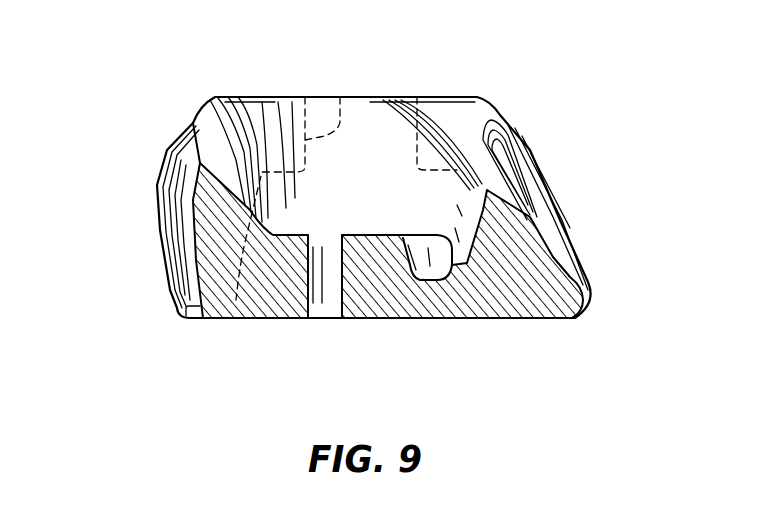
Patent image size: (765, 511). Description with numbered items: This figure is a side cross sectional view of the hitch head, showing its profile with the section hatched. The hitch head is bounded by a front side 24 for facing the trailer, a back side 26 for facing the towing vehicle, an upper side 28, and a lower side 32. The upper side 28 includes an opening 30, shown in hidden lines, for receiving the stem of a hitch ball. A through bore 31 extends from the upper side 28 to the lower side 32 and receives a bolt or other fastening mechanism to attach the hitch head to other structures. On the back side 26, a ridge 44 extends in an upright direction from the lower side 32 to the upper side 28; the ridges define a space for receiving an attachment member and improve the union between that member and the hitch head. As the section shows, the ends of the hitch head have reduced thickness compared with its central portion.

The front side 24 is at (553, 200).
The back side 26 is at (165, 267).
The upper side 28 is at (423, 97).
The opening 30 is at (340, 97).
The through bore 31 is at (340, 302).
The lower side 32 is at (537, 320).
The ridge 44 is at (158, 200).